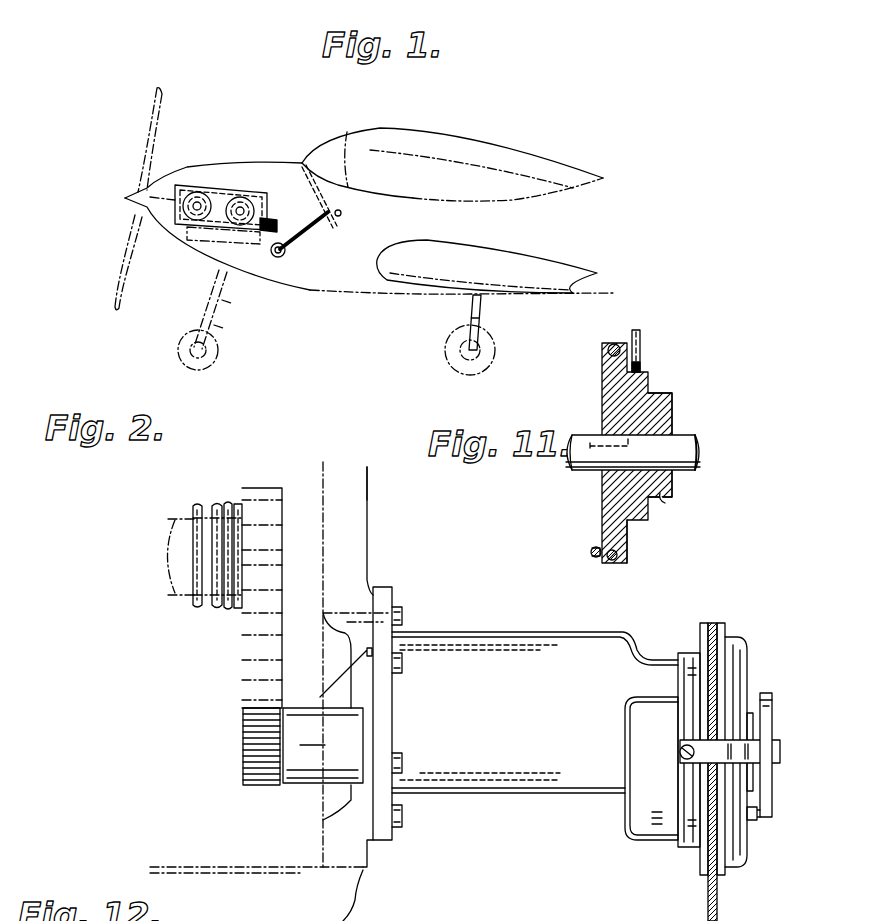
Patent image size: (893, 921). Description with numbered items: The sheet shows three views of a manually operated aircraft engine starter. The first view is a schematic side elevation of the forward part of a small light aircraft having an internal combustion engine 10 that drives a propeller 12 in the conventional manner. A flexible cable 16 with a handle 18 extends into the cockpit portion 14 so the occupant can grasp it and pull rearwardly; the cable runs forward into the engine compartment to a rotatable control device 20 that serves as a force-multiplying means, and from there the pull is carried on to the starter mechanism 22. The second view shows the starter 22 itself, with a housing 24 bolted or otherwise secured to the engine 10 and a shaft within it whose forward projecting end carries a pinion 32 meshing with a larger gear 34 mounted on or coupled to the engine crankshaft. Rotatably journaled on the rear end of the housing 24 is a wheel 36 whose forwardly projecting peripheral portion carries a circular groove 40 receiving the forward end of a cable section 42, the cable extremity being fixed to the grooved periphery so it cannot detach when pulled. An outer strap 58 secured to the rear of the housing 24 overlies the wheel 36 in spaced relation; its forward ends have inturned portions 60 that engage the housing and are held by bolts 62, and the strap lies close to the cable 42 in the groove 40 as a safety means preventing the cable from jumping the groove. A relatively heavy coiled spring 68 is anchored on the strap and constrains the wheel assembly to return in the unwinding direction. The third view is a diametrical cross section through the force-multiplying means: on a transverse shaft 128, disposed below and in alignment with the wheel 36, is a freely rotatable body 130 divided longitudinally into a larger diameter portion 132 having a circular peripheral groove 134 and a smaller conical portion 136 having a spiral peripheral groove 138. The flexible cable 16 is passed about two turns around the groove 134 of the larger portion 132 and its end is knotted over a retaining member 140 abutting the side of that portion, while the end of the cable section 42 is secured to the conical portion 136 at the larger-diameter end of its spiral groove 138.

In FIG. 1, the internal combustion engine 10 is at (217, 197).
In FIG. 2, the internal combustion engine 10 is at (335, 468).
In FIG. 1, the propeller 12 is at (137, 146).
In FIG. 1, the cockpit portion 14 is at (380, 158).
In FIG. 1, the flexible cable 16 is at (306, 240).
In FIG. 11, the flexible cable 16 is at (616, 344).
In FIG. 2, the flexible cable 16 is at (710, 688).
In FIG. 1, the handle 18 is at (341, 214).
In FIG. 1, the rotatable control device 20 is at (275, 258).
In FIG. 1, the starter mechanism 22 is at (274, 218).
In FIG. 2, the starter mechanism 22 is at (480, 586).
In FIG. 2, the housing 24 is at (545, 632).
In FIG. 2, the pinion 32 is at (257, 787).
In FIG. 2, the larger gear 34 is at (244, 662).
In FIG. 2, the wheel 36 is at (735, 637).
In FIG. 2, the circular groove 40 is at (705, 624).
In FIG. 11, the cable section 42 is at (641, 340).
In FIG. 2, the cable section 42 is at (712, 623).
In FIG. 2, the strap 58 is at (773, 740).
In FIG. 2, the inturned portions 60 is at (690, 760).
In FIG. 2, the bolts 62 is at (680, 750).
In FIG. 2, the coiled spring 68 is at (770, 790).
In FIG. 11, the transverse shaft 128 is at (690, 445).
In FIG. 11, the freely rotatable body 130 is at (596, 415).
In FIG. 11, the larger diameter portion 132 is at (604, 527).
In FIG. 11, the circular peripheral groove 134 is at (626, 553).
In FIG. 11, the smaller conical portion 136 is at (672, 410).
In FIG. 11, the spiral peripheral groove 138 is at (661, 494).
In FIG. 11, the retaining member 140 is at (600, 553).